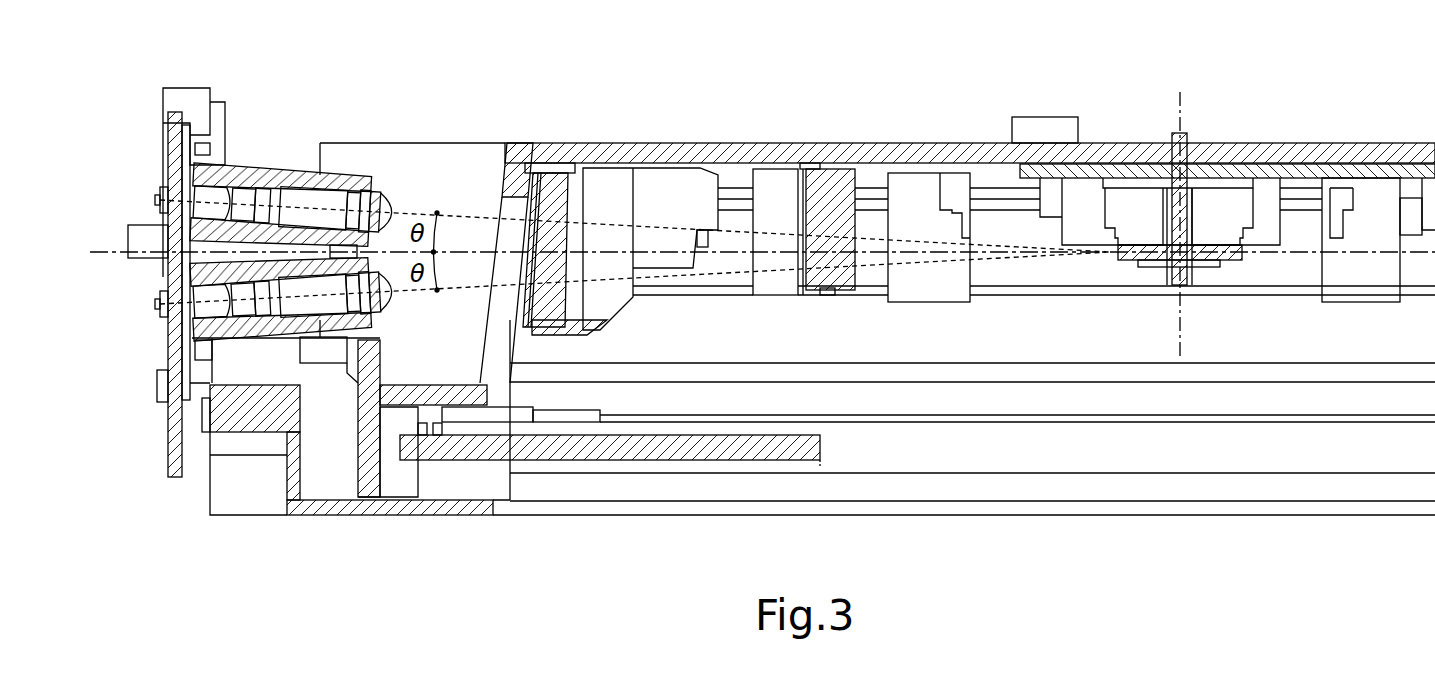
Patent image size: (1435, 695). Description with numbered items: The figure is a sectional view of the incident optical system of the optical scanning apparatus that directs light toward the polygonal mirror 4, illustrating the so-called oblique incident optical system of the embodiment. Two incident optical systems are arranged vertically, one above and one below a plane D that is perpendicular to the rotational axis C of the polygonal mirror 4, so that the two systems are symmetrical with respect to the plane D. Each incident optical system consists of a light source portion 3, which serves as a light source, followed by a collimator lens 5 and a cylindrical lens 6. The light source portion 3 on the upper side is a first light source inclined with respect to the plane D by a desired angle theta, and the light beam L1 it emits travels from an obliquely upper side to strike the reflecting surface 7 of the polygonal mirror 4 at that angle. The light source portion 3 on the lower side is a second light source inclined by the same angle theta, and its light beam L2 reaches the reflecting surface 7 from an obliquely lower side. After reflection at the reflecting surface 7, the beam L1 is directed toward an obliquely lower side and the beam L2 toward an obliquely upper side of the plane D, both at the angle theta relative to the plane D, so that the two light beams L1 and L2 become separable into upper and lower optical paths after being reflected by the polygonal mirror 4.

The light source portion 3 is at (223, 197).
The collimator lens 5 is at (389, 192).
The cylindrical lens 6 is at (550, 190).
The polygonal mirror 4 is at (1150, 248).
The reflecting surface 7 is at (1117, 250).
The light beam L1 is at (772, 233).
The light beam L2 is at (768, 273).
The rotational axis C is at (1182, 323).
The plane D is at (1295, 252).